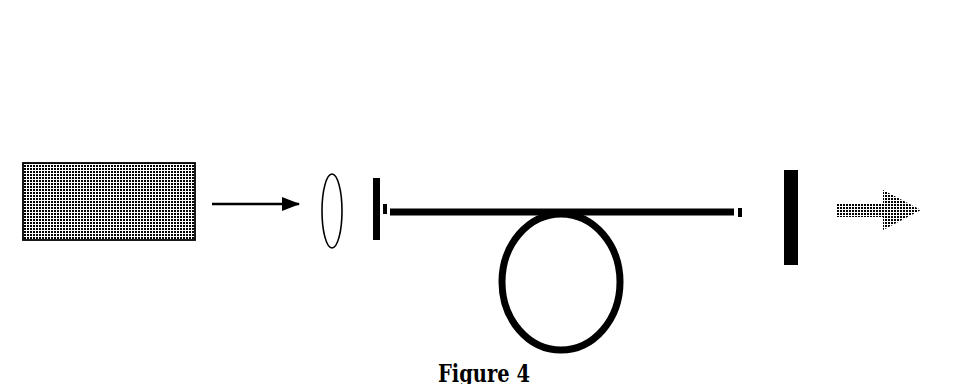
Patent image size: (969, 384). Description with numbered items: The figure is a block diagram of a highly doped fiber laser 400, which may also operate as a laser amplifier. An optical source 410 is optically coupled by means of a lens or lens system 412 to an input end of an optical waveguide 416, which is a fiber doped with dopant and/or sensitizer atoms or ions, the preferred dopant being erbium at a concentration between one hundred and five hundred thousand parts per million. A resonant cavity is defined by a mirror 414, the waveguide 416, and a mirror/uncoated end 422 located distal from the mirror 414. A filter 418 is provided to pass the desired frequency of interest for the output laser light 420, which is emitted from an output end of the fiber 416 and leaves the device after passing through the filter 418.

The highly doped fiber laser 400 is at (246, 96).
The optical source 410 is at (50, 232).
The lens or lens system 412 is at (320, 246).
The mirror 414 is at (373, 242).
The optical waveguide 416 is at (602, 332).
The filter 418 is at (791, 268).
The output laser light 420 is at (870, 197).
The mirror/uncoated end 422 is at (730, 202).